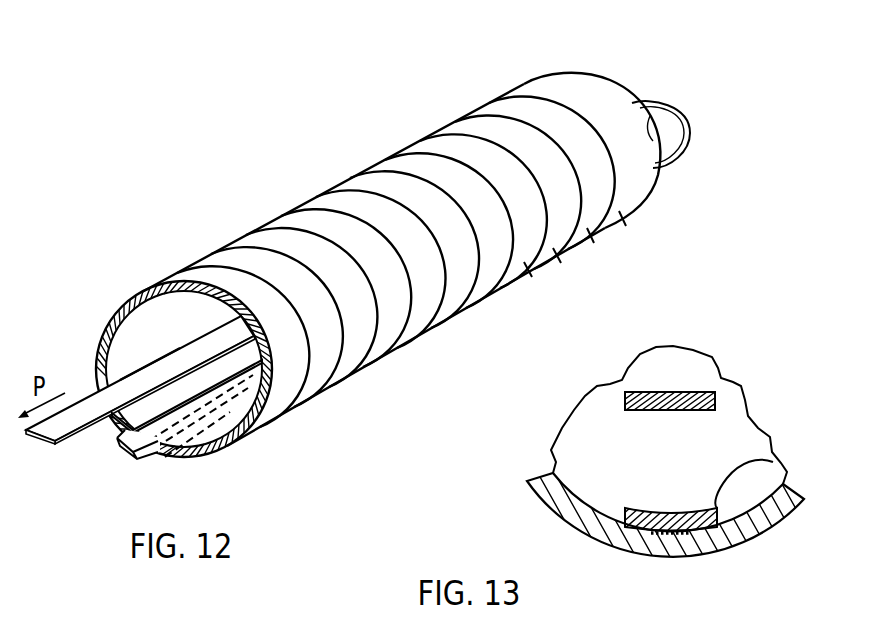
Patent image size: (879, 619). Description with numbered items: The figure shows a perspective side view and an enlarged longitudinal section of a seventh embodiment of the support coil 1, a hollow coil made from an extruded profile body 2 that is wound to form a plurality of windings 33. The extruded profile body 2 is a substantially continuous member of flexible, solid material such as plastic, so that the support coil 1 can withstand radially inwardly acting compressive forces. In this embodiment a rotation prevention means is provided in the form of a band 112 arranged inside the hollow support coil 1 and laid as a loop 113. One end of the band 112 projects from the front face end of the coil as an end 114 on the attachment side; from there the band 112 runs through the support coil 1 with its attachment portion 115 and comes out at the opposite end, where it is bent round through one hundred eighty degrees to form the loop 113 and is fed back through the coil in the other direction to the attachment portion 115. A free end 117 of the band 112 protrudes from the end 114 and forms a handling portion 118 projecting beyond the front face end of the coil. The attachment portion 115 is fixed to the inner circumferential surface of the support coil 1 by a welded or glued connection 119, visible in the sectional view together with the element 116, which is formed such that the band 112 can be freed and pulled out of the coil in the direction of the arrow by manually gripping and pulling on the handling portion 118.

In FIG. 12, the support coil 1 is at (468, 97).
In FIG. 12, the extruded profile body 2 is at (301, 224).
In FIG. 13, the extruded profile body 2 is at (520, 497).
In FIG. 12, the loop 113 is at (680, 101).
In FIG. 12, the windings 33 is at (623, 218).
In FIG. 12, the band 112 is at (140, 397).
In FIG. 12, the end on the attachment side 114 is at (144, 459).
In FIG. 12, the attachment portion 115 is at (238, 426).
In FIG. 13, the attachment portion 115 is at (773, 462).
In FIG. 12, the upper sensor element 116 is at (146, 356).
In FIG. 13, the upper sensor element 116 is at (716, 391).
In FIG. 12, the free end 117 is at (47, 446).
In FIG. 12, the handling portion 118 is at (97, 434).
In FIG. 12, the connection 119 is at (190, 415).
In FIG. 13, the connection 119 is at (627, 552).